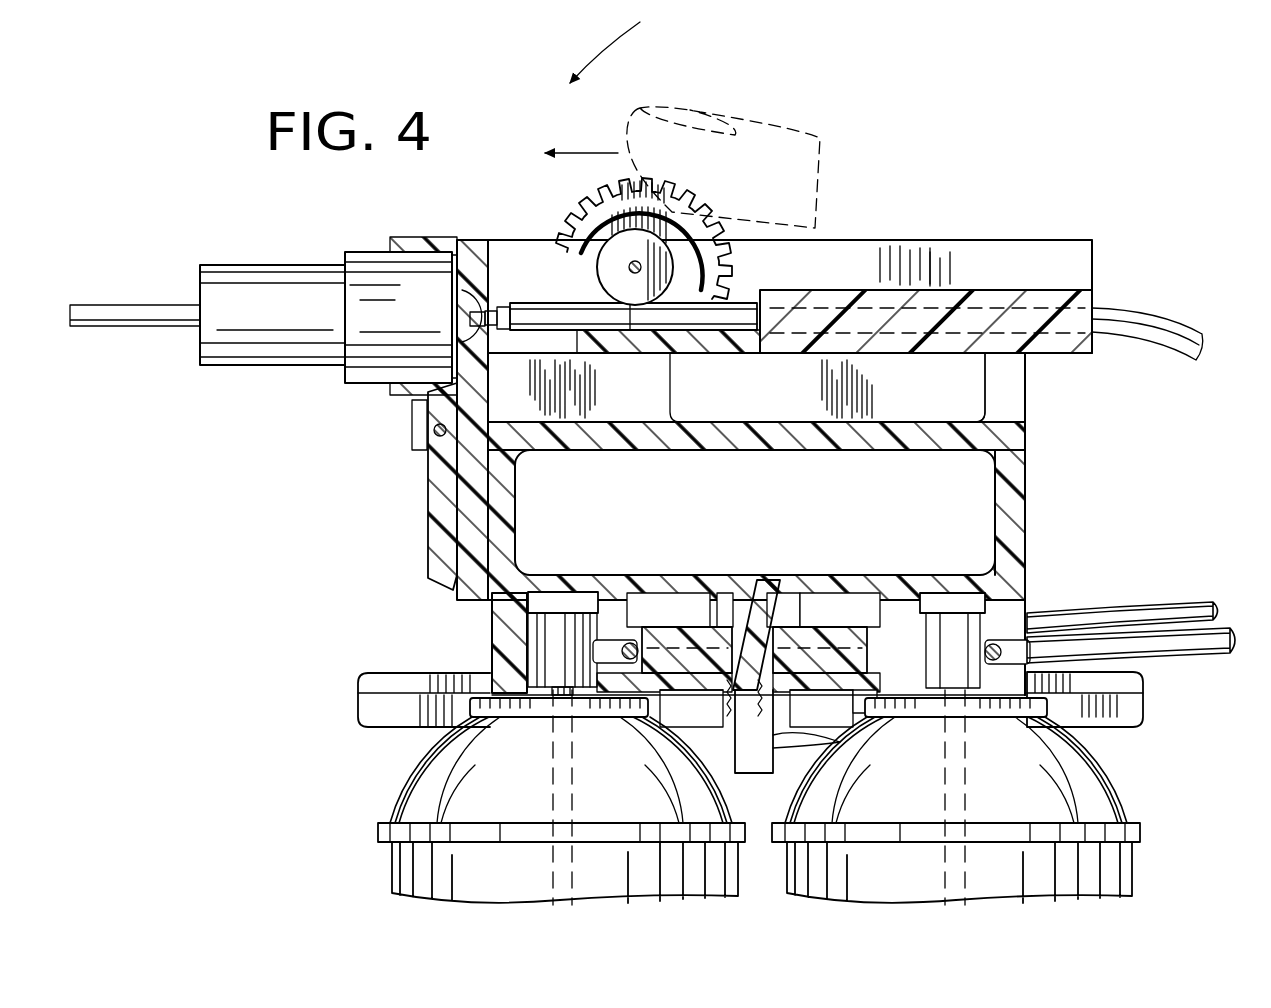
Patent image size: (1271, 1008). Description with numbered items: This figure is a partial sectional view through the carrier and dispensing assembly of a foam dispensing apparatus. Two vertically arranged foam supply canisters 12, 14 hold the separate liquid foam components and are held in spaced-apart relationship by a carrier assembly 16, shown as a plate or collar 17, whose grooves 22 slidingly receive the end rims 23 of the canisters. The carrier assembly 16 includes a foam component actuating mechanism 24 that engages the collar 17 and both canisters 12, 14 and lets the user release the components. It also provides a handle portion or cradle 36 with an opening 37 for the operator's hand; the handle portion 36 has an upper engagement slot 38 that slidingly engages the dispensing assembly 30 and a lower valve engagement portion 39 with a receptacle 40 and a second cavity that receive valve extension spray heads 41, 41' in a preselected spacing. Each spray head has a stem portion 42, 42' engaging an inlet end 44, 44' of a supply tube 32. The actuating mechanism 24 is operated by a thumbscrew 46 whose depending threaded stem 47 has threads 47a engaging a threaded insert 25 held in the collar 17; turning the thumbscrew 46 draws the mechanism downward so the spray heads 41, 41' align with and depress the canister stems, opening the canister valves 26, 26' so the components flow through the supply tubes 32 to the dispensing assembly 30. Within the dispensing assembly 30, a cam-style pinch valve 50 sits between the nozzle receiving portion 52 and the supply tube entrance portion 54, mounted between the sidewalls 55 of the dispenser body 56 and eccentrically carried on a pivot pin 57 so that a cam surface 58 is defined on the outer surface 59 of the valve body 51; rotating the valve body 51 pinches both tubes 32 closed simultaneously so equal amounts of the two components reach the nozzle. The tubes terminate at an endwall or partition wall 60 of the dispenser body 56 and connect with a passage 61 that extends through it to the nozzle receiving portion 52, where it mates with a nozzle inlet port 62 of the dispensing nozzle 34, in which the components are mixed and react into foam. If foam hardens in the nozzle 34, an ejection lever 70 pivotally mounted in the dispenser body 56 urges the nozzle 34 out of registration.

The foam supply canister 12 is at (502, 890).
The foam supply canister 14 is at (907, 890).
The carrier assembly 16 is at (352, 684).
The collar 17 is at (402, 673).
The groove 22 is at (358, 705).
The end rim 23 is at (452, 732).
The foam component actuating mechanism 24 is at (793, 422).
The threaded insert 25 is at (733, 728).
The canister valve 26 is at (519, 797).
The canister valve 26' is at (921, 797).
The dispensing assembly 30 is at (1017, 238).
The foam component supply tube 32 is at (1188, 618).
The dispensing nozzle 34 is at (265, 345).
The handle portion 36 is at (1000, 478).
The opening 37 is at (870, 494).
The upper engagement slot 38 is at (1002, 418).
The lower valve engagement portion 39 is at (485, 600).
The receptacle 40 is at (558, 605).
The valve extension spray head 41 is at (504, 645).
The valve extension spray head 41' is at (1002, 628).
The stem portion 42 is at (615, 597).
The stem portion 42' is at (1086, 716).
The inlet end 44 is at (665, 626).
The inlet end 44' is at (1088, 674).
The thumbscrew 46 is at (828, 640).
The threaded stem 47 is at (760, 773).
The threads 47a is at (790, 733).
The cam-style pinch valve 50 is at (604, 228).
The valve body 51 is at (613, 275).
The nozzle receiving portion 52 is at (440, 252).
The supply tube entrance portion 54 is at (1094, 308).
The sidewall 55 is at (933, 266).
The dispenser body 56 is at (1090, 243).
The pivot pin 57 is at (638, 262).
The cam surface 58 is at (598, 303).
The outer surface 59 is at (632, 307).
The partition wall 60 is at (463, 243).
The passage 61 is at (480, 320).
The nozzle inlet port 62 is at (468, 292).
The ejection lever 70 is at (428, 533).